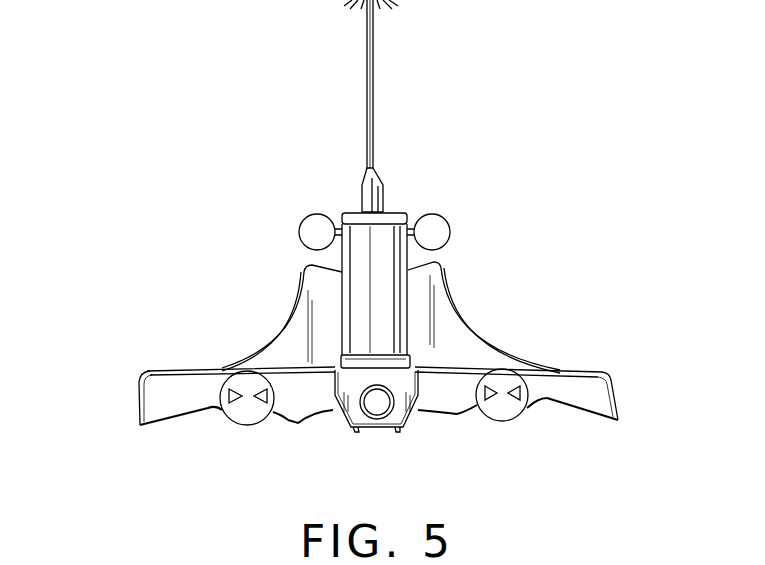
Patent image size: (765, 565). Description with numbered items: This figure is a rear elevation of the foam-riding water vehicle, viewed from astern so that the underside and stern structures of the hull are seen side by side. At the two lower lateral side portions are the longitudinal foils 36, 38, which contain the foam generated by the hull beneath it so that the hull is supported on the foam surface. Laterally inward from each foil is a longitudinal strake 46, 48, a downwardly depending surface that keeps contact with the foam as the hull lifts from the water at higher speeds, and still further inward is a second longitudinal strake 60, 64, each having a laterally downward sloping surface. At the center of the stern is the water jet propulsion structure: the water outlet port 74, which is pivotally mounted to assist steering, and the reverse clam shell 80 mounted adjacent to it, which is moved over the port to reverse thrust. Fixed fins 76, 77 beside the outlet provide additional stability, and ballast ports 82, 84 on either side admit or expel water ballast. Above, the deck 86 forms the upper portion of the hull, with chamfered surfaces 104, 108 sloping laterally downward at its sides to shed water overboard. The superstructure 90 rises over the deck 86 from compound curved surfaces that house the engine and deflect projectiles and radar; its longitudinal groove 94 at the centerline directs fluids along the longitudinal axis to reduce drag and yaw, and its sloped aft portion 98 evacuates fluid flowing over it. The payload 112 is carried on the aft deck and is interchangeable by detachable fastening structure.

The payload 112 is at (400, 213).
The longitudinal groove 94 is at (318, 262).
The aft portion of the superstructure 98 is at (325, 305).
The superstructure 90 is at (448, 291).
The deck 86 is at (170, 370).
The chamfered surface 108 is at (145, 374).
The longitudinal foil 38 is at (140, 428).
The ballast port 82 is at (247, 385).
The longitudinal strake 48 is at (248, 426).
The second longitudinal strake 64 is at (292, 424).
The reverse clam shell 80 is at (400, 368).
The water outlet port 74 is at (377, 410).
The fixed fin 76 is at (355, 433).
The fixed fin 77 is at (398, 433).
The second longitudinal strake 60 is at (458, 417).
The ballast port 84 is at (513, 378).
The longitudinal strake 46 is at (506, 421).
The longitudinal foil 36 is at (615, 424).
The chamfered surface 104 is at (610, 376).